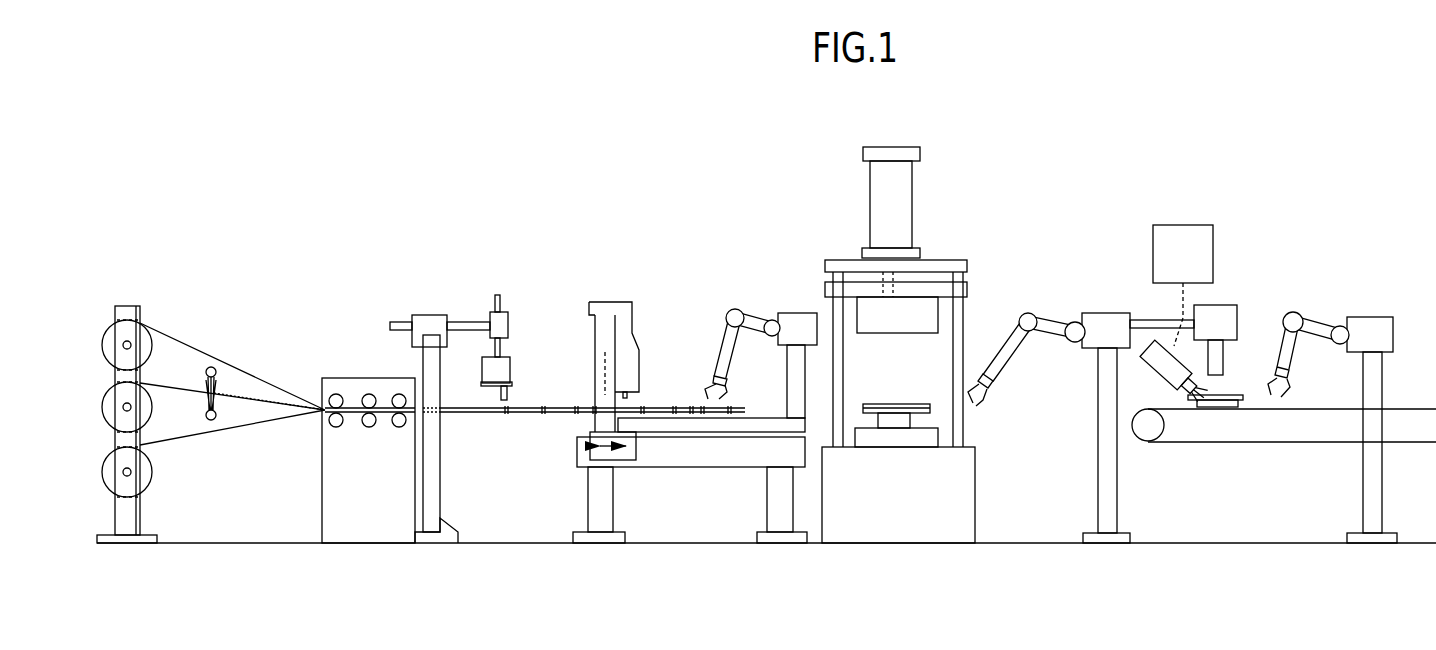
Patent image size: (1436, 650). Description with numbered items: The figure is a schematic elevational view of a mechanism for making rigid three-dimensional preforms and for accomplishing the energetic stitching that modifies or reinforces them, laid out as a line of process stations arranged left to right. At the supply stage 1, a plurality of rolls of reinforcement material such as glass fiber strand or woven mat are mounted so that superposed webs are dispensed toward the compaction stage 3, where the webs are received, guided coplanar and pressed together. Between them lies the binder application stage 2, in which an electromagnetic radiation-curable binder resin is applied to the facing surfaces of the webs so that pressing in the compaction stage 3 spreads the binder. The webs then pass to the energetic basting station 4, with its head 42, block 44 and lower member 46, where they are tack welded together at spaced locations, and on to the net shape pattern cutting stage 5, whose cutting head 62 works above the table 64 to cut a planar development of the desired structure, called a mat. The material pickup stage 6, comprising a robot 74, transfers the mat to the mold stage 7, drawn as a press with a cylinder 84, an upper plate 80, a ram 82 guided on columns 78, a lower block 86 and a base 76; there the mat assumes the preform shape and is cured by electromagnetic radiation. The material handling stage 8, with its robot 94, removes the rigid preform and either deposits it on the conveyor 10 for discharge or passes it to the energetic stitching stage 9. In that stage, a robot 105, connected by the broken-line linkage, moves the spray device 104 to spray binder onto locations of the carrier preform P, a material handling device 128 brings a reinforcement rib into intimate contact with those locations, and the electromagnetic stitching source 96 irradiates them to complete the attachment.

The supply stage 1 is at (121, 286).
The binder application stage 2 is at (200, 327).
The compaction stage 3 is at (351, 323).
The energetic basting station 4 is at (473, 375).
The cutter head 42 is at (434, 314).
The cutter block 44 is at (487, 353).
The cutter blade 46 is at (512, 382).
The net shape pattern cutting stage 5 is at (674, 375).
The bending head 62 is at (588, 322).
The bending table 64 is at (703, 460).
The material pickup stage 6 is at (761, 313).
The robot 74 is at (796, 313).
The mold stage 7 is at (905, 341).
The press cylinder 84 is at (880, 182).
The press top plate 80 is at (858, 288).
The press ram 82 is at (917, 313).
The press columns 78 is at (838, 337).
The lower die block 86 is at (925, 437).
The press base 76 is at (836, 490).
The material handling stage 8 is at (1049, 364).
The robot 94 is at (1090, 312).
The robot 105 is at (1170, 236).
The spray device 104 is at (1163, 357).
The energetic stitching stage 9 is at (1201, 280).
The electromagnetic stitching source 96 is at (1229, 300).
The workpiece P is at (1218, 407).
The conveyor 10 is at (1411, 405).
The material handling device 128 is at (1362, 325).